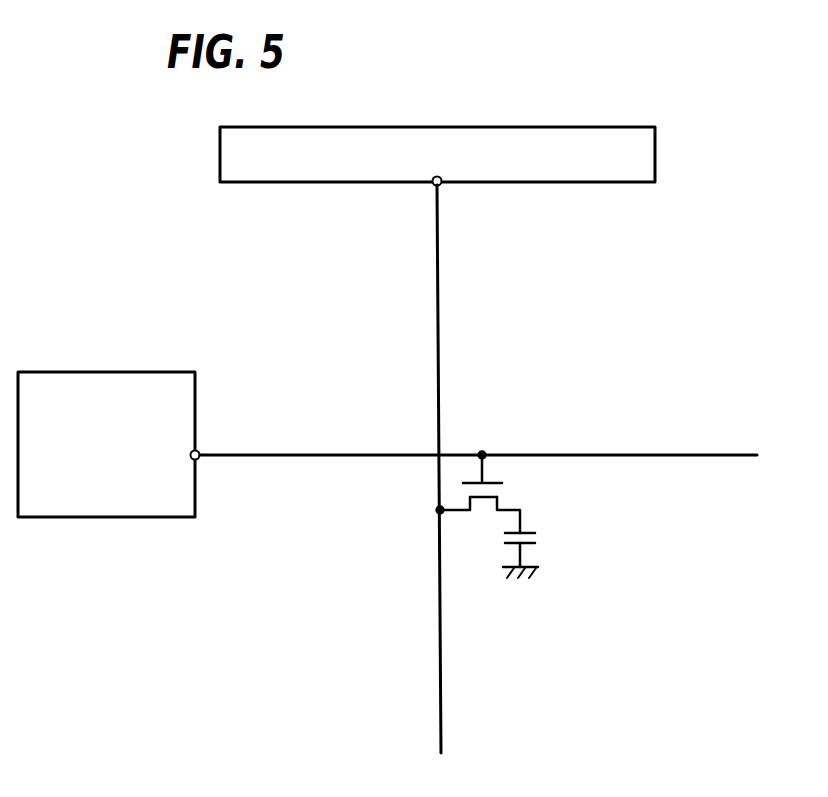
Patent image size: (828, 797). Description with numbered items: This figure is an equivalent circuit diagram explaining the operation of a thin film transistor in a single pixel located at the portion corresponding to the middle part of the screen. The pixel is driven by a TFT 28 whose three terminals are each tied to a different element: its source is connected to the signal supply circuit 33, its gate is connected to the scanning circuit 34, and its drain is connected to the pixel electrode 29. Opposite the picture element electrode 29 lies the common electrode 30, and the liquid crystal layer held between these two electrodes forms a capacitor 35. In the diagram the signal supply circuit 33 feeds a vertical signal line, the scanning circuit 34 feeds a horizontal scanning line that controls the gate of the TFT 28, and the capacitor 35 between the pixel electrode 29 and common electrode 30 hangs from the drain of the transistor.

The signal supply circuit 33 is at (410, 127).
The scanning circuit 34 is at (107, 372).
The TFT 28 is at (502, 490).
The pixel electrode 29 is at (535, 532).
The common electrode 30 is at (528, 551).
The capacitor 35 is at (505, 543).